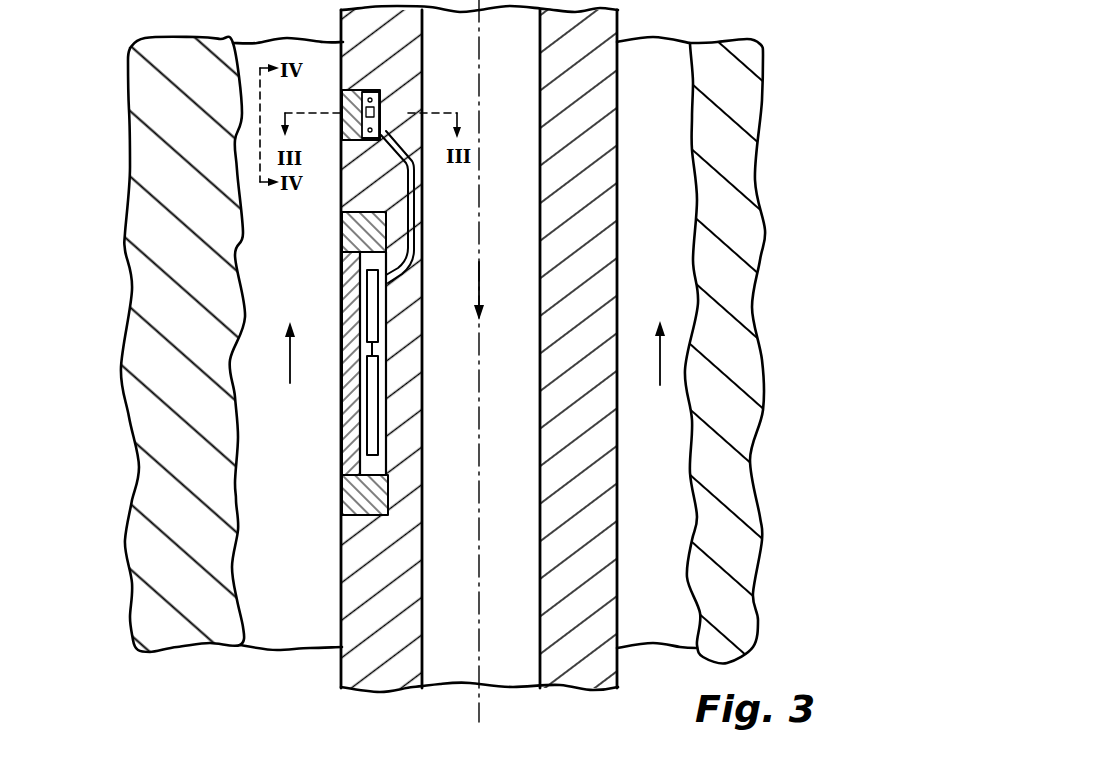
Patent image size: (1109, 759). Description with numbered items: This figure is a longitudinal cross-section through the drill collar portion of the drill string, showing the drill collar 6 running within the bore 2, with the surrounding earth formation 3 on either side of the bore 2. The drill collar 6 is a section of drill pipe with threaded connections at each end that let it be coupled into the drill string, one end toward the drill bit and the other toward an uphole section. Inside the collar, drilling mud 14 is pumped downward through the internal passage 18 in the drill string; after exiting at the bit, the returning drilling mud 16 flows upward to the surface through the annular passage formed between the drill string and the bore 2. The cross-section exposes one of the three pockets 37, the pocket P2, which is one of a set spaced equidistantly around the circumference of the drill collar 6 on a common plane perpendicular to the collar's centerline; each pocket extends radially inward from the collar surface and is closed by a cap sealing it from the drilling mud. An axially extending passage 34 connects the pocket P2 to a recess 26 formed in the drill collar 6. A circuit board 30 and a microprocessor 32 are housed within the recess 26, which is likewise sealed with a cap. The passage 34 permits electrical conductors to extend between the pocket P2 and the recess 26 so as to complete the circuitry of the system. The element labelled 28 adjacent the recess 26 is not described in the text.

The bore 2 is at (265, 40).
The formation 3 is at (171, 40).
The drill collar 6 is at (618, 236).
The drilling mud 14 is at (480, 288).
The returning drilling mud 16 is at (290, 375).
The internal passage 18 is at (491, 434).
The recess 26 is at (355, 518).
The hatched retaining block 28 is at (342, 481).
The circuit board 30 is at (378, 318).
The microprocessor 32 is at (378, 445).
The axially extending passage 34 is at (412, 212).
The pocket 37 is at (381, 102).
The pocket P2 is at (380, 90).